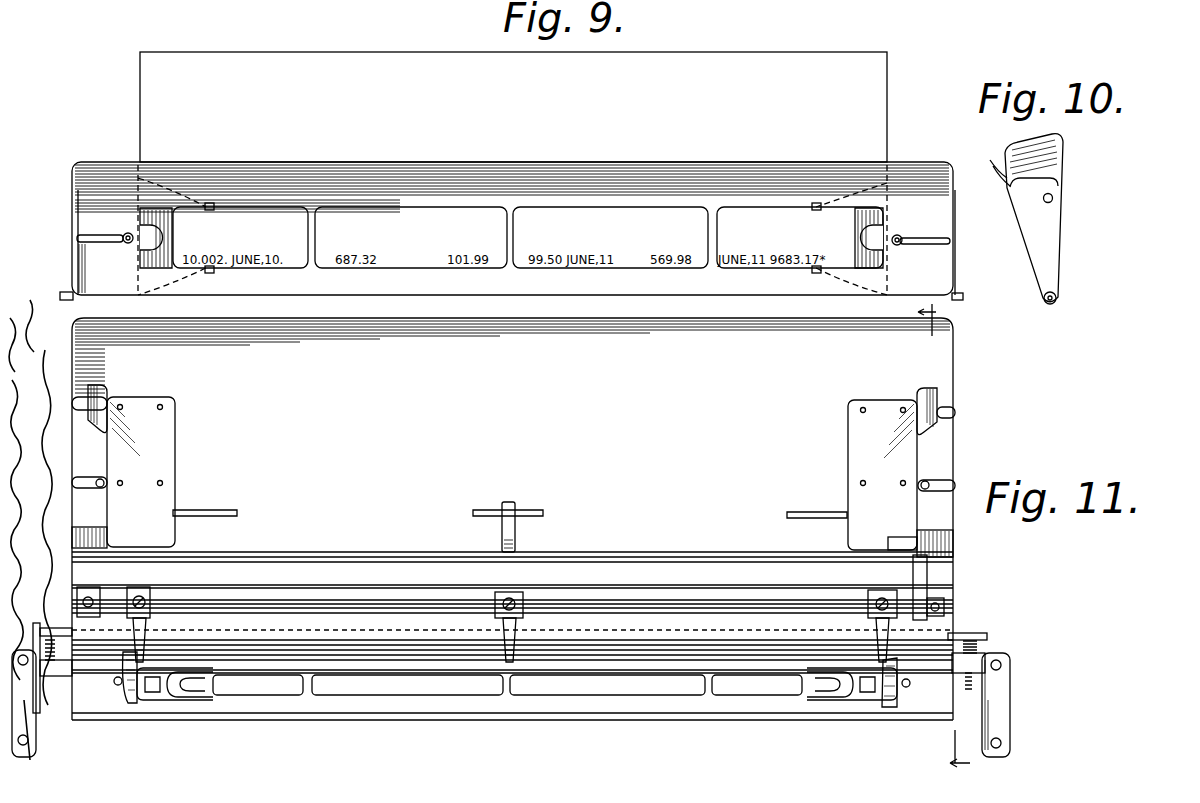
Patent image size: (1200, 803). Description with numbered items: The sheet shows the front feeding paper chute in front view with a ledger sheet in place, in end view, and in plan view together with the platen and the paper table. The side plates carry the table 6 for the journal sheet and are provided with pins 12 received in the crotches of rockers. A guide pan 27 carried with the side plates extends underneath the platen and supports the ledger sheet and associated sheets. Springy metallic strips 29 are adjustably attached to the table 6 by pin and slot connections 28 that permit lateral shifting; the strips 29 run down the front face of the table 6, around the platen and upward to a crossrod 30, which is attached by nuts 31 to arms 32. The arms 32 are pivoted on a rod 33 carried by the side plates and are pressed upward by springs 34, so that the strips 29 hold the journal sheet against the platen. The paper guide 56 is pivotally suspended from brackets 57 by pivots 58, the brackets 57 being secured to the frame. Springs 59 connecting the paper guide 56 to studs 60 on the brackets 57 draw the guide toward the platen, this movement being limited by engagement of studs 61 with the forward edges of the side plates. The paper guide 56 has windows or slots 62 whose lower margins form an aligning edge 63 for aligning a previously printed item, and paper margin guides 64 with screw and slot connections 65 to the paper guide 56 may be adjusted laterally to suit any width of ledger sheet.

In FIG. 9, the table 6 is at (513, 107).
In FIG. 11, the table 6 is at (512, 519).
In FIG. 11, the pins 12 is at (931, 546).
In FIG. 11, the guide pan 27 is at (152, 600).
In FIG. 11, the pin and slot connections 28 is at (512, 503).
In FIG. 11, the springy metallic strips 29 is at (517, 541).
In FIG. 11, the crossrod 30 is at (608, 602).
In FIG. 11, the nuts 31 is at (950, 601).
In FIG. 11, the arms 32 is at (104, 568).
In FIG. 11, the rod 33 is at (893, 537).
In FIG. 11, the springs 34 is at (940, 530).
In FIG. 9, the paper guide 56 is at (740, 210).
In FIG. 10, the paper guide 56 is at (1000, 180).
In FIG. 11, the paper guide 56 is at (795, 704).
In FIG. 11, the brackets 57 is at (1006, 703).
In FIG. 11, the pivots 58 is at (986, 665).
In FIG. 11, the springs 59 is at (978, 646).
In FIG. 11, the studs 60 is at (975, 633).
In FIG. 9, the studs 61 is at (62, 296).
In FIG. 10, the studs 61 is at (1057, 298).
In FIG. 9, the windows or slots 62 is at (568, 204).
In FIG. 11, the windows or slots 62 is at (590, 697).
In FIG. 9, the aligning edge 63 is at (566, 270).
In FIG. 11, the aligning edge 63 is at (470, 677).
In FIG. 9, the paper margin guides 64 is at (176, 216).
In FIG. 11, the paper margin guides 64 is at (185, 701).
In FIG. 9, the screw and slot connections 65 is at (127, 236).
In FIG. 11, the screw and slot connections 65 is at (124, 705).